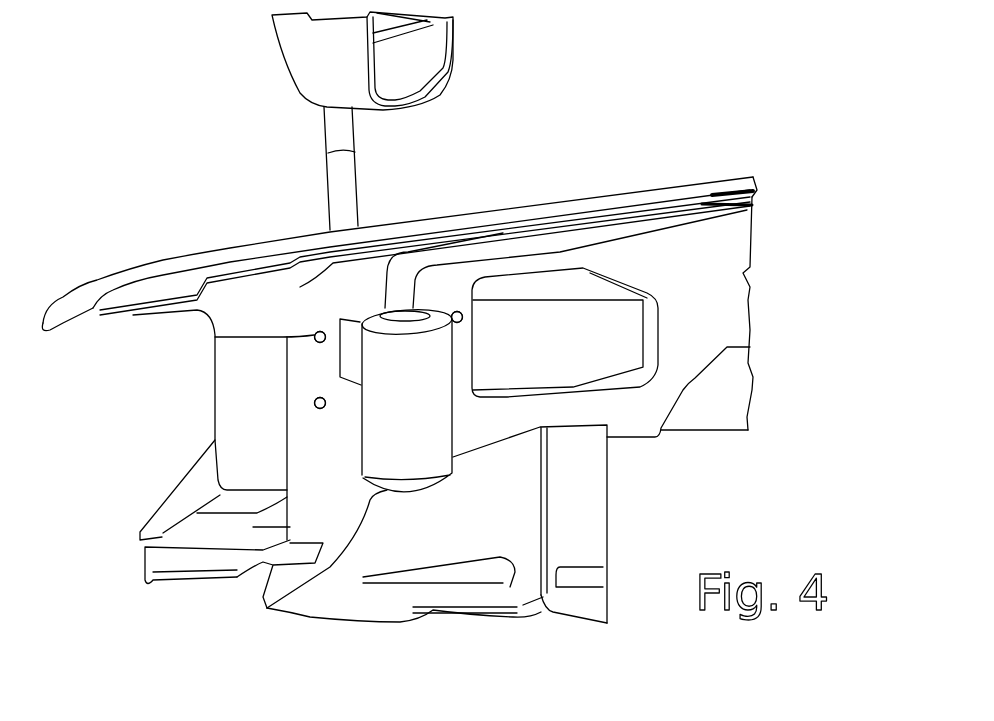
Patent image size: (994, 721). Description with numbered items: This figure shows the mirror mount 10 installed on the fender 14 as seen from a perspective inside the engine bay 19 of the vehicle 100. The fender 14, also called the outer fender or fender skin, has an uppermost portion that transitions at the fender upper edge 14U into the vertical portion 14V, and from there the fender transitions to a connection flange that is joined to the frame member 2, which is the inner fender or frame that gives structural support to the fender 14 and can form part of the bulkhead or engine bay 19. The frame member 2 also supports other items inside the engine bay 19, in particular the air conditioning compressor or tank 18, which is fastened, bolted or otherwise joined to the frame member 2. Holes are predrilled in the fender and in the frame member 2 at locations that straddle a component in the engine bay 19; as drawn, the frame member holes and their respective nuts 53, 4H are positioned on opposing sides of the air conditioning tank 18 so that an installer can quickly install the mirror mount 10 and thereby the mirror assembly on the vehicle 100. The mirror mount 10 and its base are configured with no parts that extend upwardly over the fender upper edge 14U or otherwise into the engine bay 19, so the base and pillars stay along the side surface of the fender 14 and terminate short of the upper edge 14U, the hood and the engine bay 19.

The mirror mount 10 is at (288, 180).
The fender 14 is at (703, 190).
The fender upper edge 14U is at (752, 192).
The vertical portion 14V is at (708, 207).
The frame member 2 is at (452, 293).
The nuts 53 is at (314, 402).
The holes 4H is at (460, 323).
The air conditioning compressor 18 is at (410, 457).
The vehicle 100 is at (737, 407).
The engine bay 19 is at (668, 517).